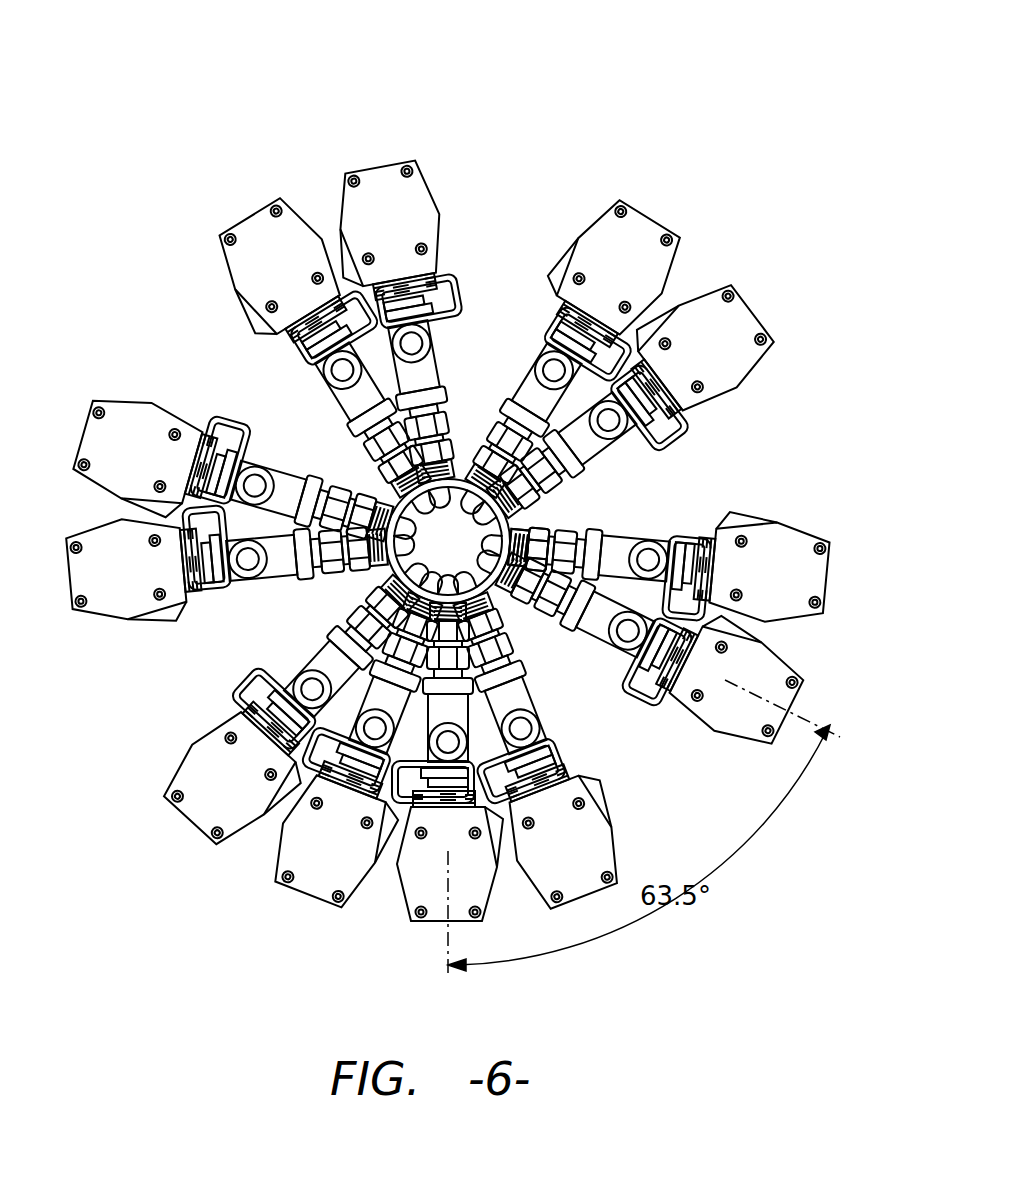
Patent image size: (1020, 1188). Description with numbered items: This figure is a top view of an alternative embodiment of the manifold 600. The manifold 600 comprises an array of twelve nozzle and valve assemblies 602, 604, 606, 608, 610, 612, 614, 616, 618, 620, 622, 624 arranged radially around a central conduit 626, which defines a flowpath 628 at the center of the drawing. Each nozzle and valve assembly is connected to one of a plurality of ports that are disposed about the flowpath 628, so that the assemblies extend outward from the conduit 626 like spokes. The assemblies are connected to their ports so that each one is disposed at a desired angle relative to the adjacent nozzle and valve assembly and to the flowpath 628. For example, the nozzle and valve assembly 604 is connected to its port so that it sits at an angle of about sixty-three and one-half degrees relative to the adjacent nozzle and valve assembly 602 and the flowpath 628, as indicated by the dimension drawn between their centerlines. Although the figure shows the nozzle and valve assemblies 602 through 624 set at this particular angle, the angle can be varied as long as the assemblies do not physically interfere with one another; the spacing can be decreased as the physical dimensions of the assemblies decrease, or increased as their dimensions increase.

The manifold 600 is at (555, 173).
The nozzle and valve assembly 602 is at (432, 920).
The nozzle and valve assembly 604 is at (790, 654).
The nozzle and valve assembly 606 is at (748, 302).
The nozzle and valve assembly 608 is at (387, 170).
The nozzle and valve assembly 610 is at (128, 398).
The nozzle and valve assembly 612 is at (178, 765).
The nozzle and valve assembly 614 is at (607, 788).
The nozzle and valve assembly 616 is at (760, 512).
The nozzle and valve assembly 618 is at (650, 218).
The nozzle and valve assembly 620 is at (255, 213).
The nozzle and valve assembly 622 is at (150, 630).
The nozzle and valve assembly 624 is at (277, 856).
The conduit 626 is at (553, 522).
The flowpath 628 is at (472, 546).